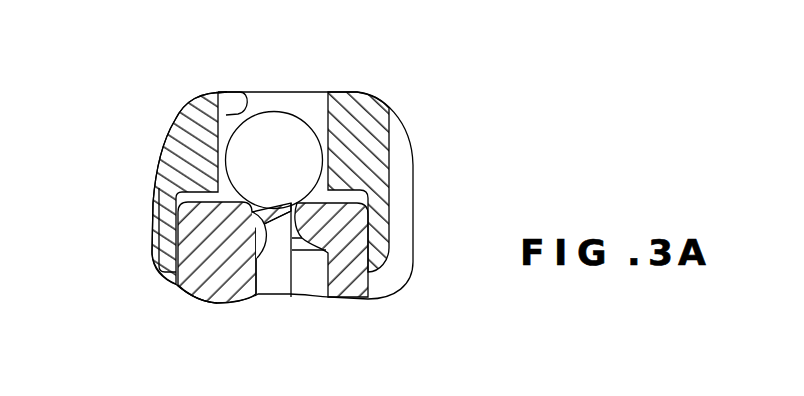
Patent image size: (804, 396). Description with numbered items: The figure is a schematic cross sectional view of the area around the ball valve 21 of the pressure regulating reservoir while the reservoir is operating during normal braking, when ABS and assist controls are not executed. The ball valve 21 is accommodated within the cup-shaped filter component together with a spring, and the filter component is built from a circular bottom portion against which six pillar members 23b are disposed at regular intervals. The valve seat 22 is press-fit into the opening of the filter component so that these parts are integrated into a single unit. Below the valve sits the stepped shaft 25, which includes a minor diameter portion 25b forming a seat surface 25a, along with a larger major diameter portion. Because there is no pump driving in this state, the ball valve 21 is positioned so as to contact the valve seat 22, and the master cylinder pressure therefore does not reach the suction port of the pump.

The ball valve 21 is at (288, 132).
The valve seat 22 is at (177, 222).
The pillar member 23b is at (247, 100).
The shaft 25 is at (203, 284).
The seat surface 25a is at (165, 233).
The minor diameter portion 25b is at (166, 282).